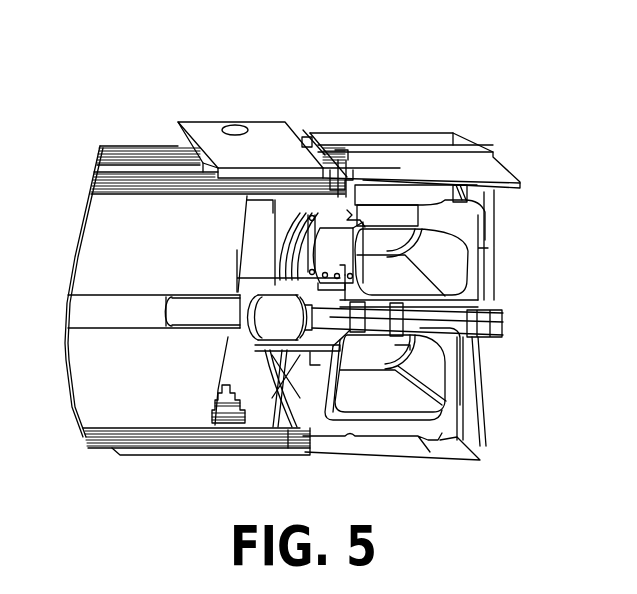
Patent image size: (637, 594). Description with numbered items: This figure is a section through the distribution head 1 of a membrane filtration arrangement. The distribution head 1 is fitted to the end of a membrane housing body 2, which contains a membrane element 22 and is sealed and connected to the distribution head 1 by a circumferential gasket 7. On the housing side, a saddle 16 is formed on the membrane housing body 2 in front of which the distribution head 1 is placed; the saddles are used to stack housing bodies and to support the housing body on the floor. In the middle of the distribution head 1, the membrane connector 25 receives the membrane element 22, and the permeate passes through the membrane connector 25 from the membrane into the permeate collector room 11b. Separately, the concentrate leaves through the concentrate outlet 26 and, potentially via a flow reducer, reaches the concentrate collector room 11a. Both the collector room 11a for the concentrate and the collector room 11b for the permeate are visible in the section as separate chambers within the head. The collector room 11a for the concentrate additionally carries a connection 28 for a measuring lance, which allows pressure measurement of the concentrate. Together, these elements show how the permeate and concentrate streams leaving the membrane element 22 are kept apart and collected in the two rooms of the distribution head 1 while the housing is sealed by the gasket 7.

The distribution head 1 is at (430, 134).
The membrane housing body 2 is at (153, 158).
The gasket 7 is at (347, 200).
The collector room for the concentrate 11a is at (407, 285).
The collector room for the permeate 11b is at (390, 402).
The saddle 16 is at (262, 127).
The membrane element 22 is at (157, 410).
The membrane connector 25 is at (265, 318).
The concentrate outlet 26 is at (328, 240).
The connection for a measuring lance 28 is at (485, 254).